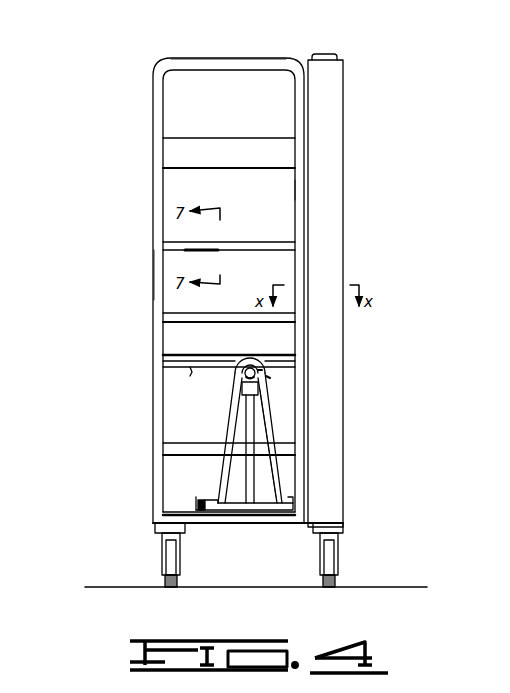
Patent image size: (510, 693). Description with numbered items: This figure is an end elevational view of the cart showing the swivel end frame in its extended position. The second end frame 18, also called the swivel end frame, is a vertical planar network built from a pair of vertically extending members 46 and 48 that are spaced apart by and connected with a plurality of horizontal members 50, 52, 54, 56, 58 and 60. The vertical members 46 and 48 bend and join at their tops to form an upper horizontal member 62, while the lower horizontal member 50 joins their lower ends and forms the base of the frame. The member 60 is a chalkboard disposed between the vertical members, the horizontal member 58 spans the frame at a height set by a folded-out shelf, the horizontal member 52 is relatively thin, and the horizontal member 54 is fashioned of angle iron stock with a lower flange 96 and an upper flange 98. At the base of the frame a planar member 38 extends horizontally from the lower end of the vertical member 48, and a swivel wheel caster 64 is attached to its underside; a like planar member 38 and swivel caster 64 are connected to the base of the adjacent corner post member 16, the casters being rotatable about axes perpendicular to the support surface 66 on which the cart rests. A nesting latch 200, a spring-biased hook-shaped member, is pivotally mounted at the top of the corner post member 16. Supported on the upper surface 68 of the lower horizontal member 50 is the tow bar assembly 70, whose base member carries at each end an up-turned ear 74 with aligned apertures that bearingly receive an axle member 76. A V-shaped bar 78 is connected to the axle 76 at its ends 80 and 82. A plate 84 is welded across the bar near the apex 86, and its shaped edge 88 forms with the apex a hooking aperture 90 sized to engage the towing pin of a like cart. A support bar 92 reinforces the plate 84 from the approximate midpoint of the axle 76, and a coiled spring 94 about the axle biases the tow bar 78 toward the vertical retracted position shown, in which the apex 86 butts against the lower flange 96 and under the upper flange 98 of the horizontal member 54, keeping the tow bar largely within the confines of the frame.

The corner post member 16 is at (345, 69).
The second end frame 18 is at (162, 66).
The planar member 38 is at (155, 528).
The vertically extending member 46 is at (297, 192).
The vertically extending member 48 is at (153, 270).
The lower horizontal member 50 is at (278, 524).
The horizontal member 52 is at (170, 448).
The horizontal member 54 is at (170, 362).
The horizontal member 56 is at (228, 313).
The horizontal member 58 is at (244, 242).
The chalkboard 60 is at (233, 138).
The upper horizontal member 62 is at (233, 60).
The swivel wheel caster 64 is at (161, 558).
The support surface 66 is at (388, 587).
The upper surface 68 is at (172, 512).
The tow bar assembly 70 is at (274, 450).
The up-turned ear 74 is at (197, 504).
The axle member 76 is at (238, 503).
The V-shaped bar 78 is at (229, 432).
The end of bar 80 is at (214, 498).
The end of bar 82 is at (285, 493).
The plate 84 is at (262, 399).
The apex 86 is at (262, 364).
The shaped edge 88 is at (260, 381).
The hooking aperture 90 is at (270, 378).
The support bar 92 is at (280, 436).
The coiled spring 94 is at (209, 514).
The lower flange 96 is at (182, 381).
The upper flange 98 is at (212, 354).
The nesting latch 200 is at (330, 56).